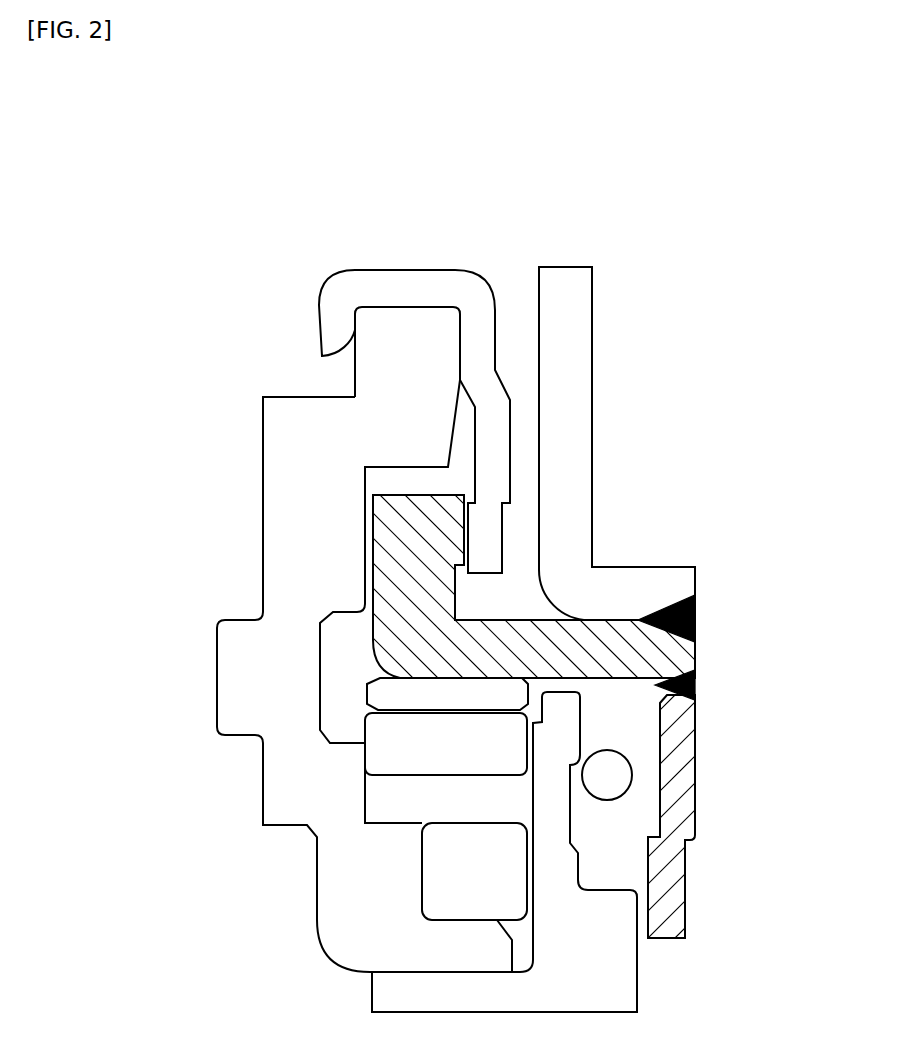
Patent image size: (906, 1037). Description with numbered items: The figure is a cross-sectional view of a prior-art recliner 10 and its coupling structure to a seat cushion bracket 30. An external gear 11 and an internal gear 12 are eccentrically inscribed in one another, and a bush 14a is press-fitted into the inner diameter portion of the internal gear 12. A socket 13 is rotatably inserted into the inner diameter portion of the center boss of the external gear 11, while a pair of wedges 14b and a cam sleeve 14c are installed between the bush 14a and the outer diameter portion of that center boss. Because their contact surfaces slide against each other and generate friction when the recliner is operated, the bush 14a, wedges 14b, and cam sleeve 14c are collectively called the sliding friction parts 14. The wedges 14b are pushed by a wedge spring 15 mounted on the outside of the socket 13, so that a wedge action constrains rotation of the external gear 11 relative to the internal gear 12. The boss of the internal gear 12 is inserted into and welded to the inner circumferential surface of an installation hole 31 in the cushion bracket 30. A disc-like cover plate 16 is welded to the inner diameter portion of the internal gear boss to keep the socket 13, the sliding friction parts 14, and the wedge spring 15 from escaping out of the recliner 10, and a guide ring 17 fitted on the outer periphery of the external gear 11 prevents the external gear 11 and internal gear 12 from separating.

The recliner 10 is at (246, 377).
The external gear 11 is at (288, 500).
The internal gear 12 is at (560, 637).
The socket 13 is at (622, 987).
The sliding friction parts 14 is at (120, 708).
The bush 14a is at (383, 695).
The wedges 14b is at (388, 753).
The cam sleeve 14c is at (445, 862).
The wedge spring 15 is at (630, 773).
The cover plate 16 is at (685, 822).
The guide ring 17 is at (405, 287).
The cushion bracket 30 is at (593, 338).
The installation hole 31 is at (623, 620).